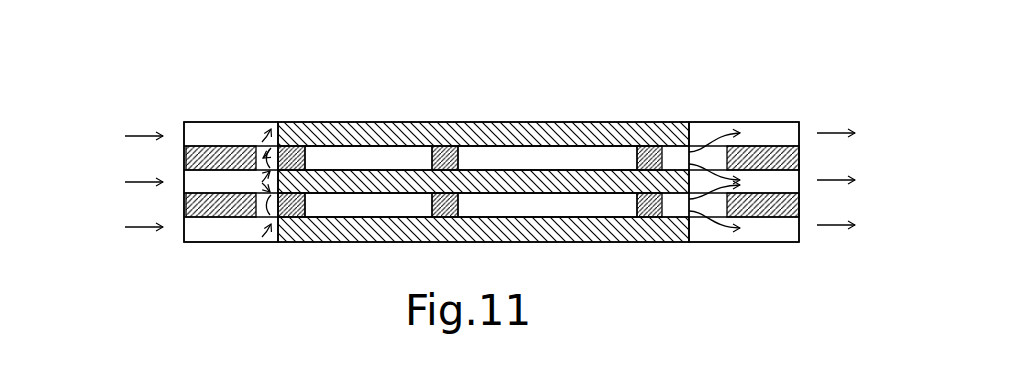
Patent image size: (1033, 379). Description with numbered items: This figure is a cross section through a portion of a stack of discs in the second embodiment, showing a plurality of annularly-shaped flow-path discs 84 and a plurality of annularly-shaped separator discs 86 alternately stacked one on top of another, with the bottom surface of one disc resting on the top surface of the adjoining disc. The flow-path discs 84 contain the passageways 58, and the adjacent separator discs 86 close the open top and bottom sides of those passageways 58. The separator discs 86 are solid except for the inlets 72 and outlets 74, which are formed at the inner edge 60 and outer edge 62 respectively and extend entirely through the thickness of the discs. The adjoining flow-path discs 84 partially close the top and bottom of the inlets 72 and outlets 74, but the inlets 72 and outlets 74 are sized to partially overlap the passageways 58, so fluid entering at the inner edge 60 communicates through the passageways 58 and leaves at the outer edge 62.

The flow passageways 58 is at (549, 202).
The inner edge 60 is at (184, 155).
The outer edge 62 is at (799, 160).
The inlets 72 is at (220, 128).
The outlets 74 is at (763, 133).
The flow-path discs 84 is at (455, 192).
The separator discs 86 is at (370, 218).